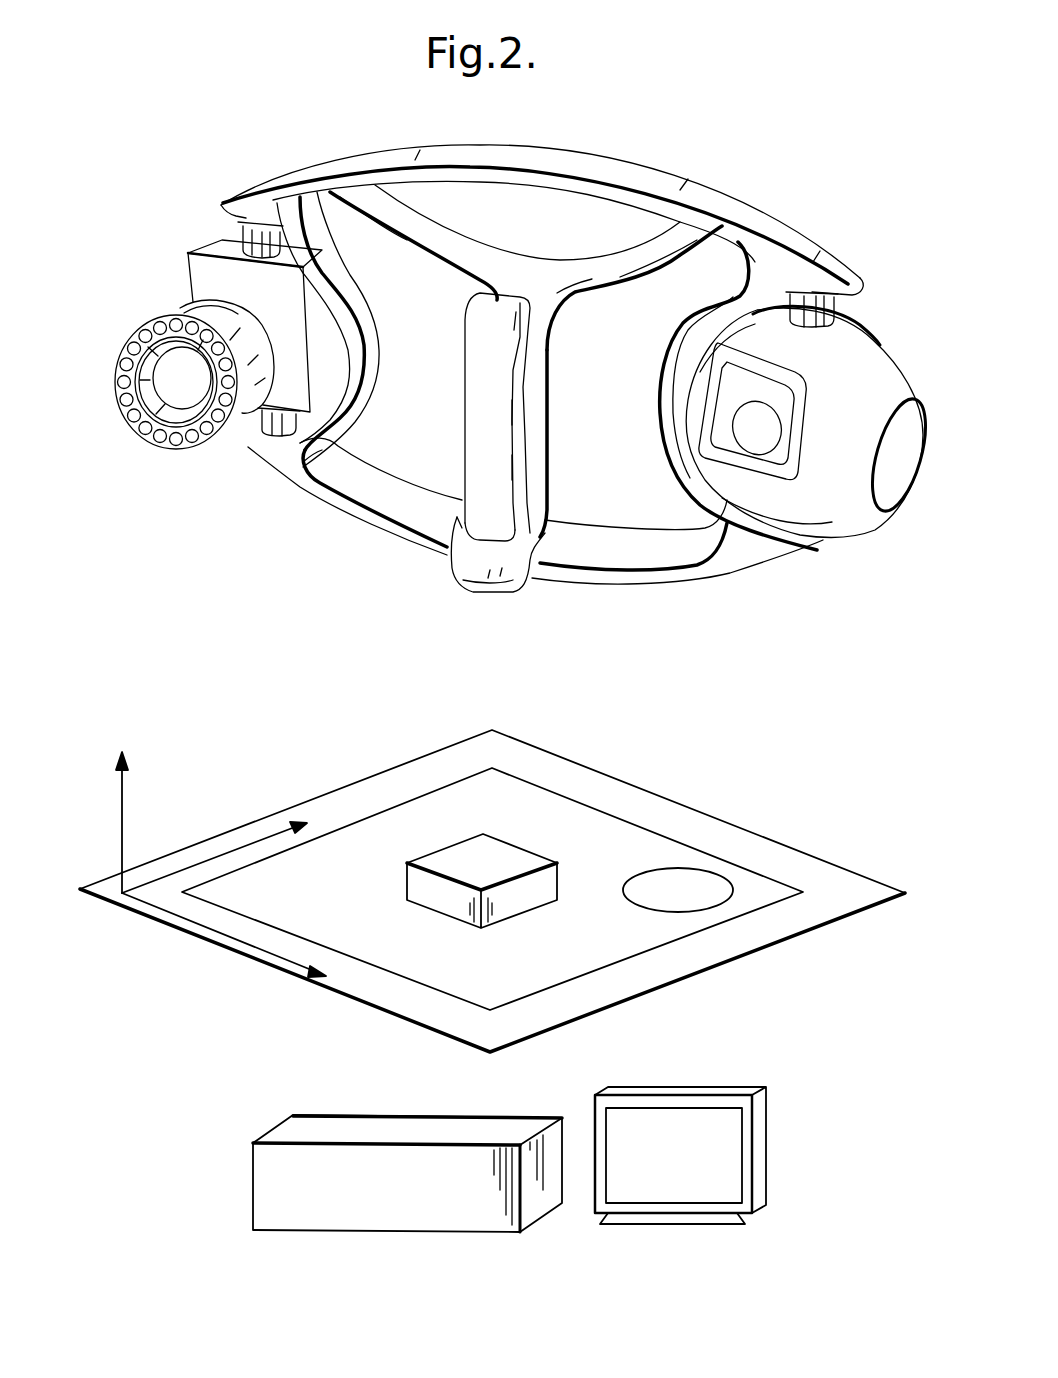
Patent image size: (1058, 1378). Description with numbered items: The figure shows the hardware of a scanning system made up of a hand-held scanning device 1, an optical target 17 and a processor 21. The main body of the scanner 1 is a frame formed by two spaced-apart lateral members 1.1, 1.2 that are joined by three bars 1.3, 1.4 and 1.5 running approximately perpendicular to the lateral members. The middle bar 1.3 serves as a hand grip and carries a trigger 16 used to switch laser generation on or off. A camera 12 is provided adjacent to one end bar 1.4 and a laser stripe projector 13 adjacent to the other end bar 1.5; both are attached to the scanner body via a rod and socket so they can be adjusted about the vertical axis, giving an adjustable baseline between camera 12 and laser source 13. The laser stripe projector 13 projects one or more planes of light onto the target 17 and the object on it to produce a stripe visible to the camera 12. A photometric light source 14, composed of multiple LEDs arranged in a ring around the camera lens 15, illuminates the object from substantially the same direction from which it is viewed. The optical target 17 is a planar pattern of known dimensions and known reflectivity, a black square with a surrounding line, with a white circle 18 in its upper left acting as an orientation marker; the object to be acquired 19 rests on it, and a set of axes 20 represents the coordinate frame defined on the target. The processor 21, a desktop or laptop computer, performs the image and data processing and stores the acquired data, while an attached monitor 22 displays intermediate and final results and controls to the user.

The hand-held scanning device 1 is at (494, 347).
The lateral member 1.1 is at (466, 152).
The lateral member 1.2 is at (405, 512).
The middle bar 1.3 is at (538, 484).
The end bar 1.4 is at (376, 370).
The end bar 1.5 is at (688, 448).
The camera 12 is at (200, 268).
The laser stripe projector 13 is at (773, 447).
The photometric light source 14 is at (118, 348).
The camera lens 15 is at (172, 392).
The trigger 16 is at (510, 345).
The optical target 17 is at (328, 771).
The white circle 18 is at (710, 884).
The object to be acquired 19 is at (494, 879).
The set of axes 20 is at (122, 820).
The processor 21 is at (252, 1178).
The monitor 22 is at (765, 1152).